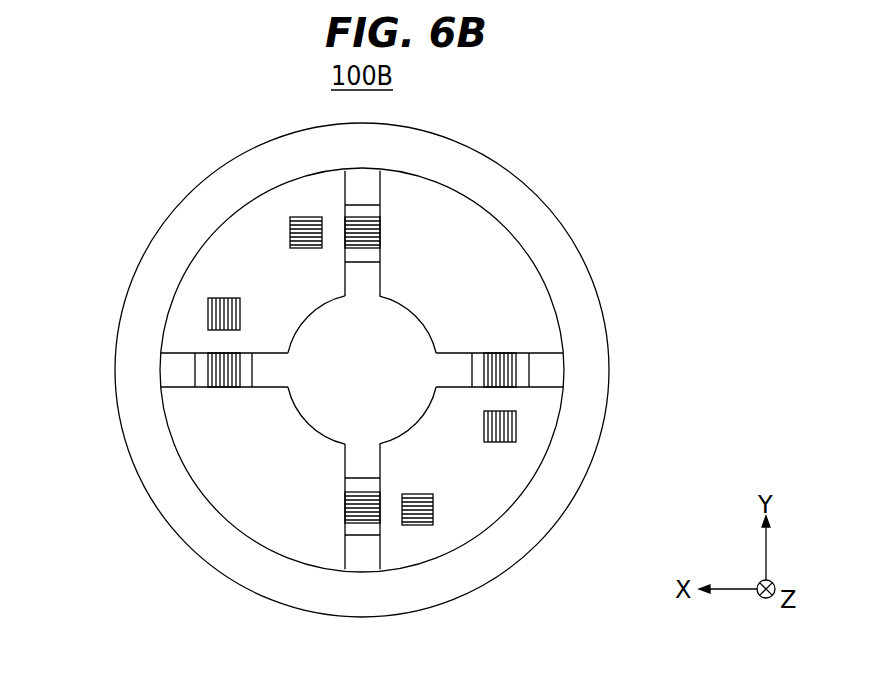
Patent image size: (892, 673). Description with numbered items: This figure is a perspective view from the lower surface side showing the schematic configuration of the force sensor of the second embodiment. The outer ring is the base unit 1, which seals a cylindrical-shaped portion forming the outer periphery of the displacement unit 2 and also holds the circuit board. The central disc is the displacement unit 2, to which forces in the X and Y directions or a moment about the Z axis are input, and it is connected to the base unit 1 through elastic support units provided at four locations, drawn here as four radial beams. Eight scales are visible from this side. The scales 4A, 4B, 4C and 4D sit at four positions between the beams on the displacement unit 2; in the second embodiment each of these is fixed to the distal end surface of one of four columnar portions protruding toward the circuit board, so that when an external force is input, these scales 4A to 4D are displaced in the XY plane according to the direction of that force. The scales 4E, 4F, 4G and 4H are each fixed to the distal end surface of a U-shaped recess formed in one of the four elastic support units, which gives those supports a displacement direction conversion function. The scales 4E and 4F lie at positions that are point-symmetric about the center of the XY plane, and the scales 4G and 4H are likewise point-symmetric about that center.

The base unit 1 is at (198, 200).
The displacement unit 2 is at (420, 423).
The scale 4A is at (222, 298).
The scale 4B is at (516, 427).
The scale 4C is at (306, 216).
The scale 4D is at (433, 510).
The scale 4E is at (222, 388).
The scale 4F is at (505, 352).
The scale 4G is at (380, 232).
The scale 4H is at (345, 512).